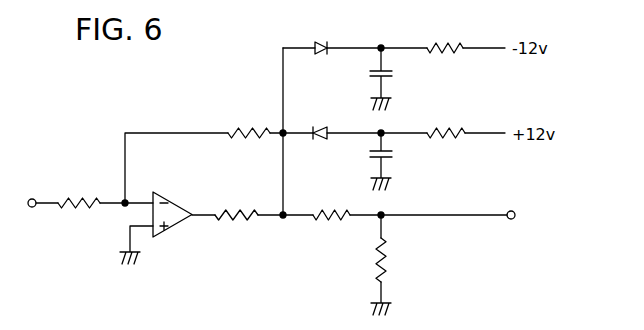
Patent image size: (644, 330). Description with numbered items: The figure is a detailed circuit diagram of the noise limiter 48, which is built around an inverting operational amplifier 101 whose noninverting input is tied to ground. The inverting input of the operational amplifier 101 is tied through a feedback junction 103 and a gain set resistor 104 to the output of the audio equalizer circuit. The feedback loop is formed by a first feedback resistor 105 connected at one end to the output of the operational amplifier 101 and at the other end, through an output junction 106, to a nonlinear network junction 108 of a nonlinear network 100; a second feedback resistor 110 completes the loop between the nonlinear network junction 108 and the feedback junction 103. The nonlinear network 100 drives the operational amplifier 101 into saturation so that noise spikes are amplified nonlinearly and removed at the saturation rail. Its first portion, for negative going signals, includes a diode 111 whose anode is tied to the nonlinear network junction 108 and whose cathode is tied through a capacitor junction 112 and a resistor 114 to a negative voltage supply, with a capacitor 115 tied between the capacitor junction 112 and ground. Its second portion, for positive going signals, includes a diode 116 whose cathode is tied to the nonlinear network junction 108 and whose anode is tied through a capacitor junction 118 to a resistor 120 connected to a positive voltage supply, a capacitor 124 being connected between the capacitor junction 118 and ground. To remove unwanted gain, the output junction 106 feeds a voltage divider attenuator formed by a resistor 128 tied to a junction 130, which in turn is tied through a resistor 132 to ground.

The noise limiter 48 is at (150, 279).
The nonlinear network 100 is at (421, 43).
The operational amplifier 101 is at (172, 228).
The feedback junction 103 is at (123, 200).
The gain set resistor 104 is at (76, 208).
The first feedback resistor 105 is at (226, 220).
The output junction 106 is at (286, 218).
The nonlinear network junction 108 is at (281, 130).
The second feedback resistor 110 is at (228, 130).
The diode 111 is at (316, 42).
The capacitor junction 112 is at (381, 45).
The resistor 114 is at (455, 52).
The capacitor 115 is at (368, 73).
The diode 116 is at (320, 126).
The capacitor junction 118 is at (384, 130).
The resistor 120 is at (463, 130).
The capacitor 124 is at (392, 156).
The resistor 128 is at (330, 212).
The junction 130 is at (384, 218).
The resistor 132 is at (386, 255).